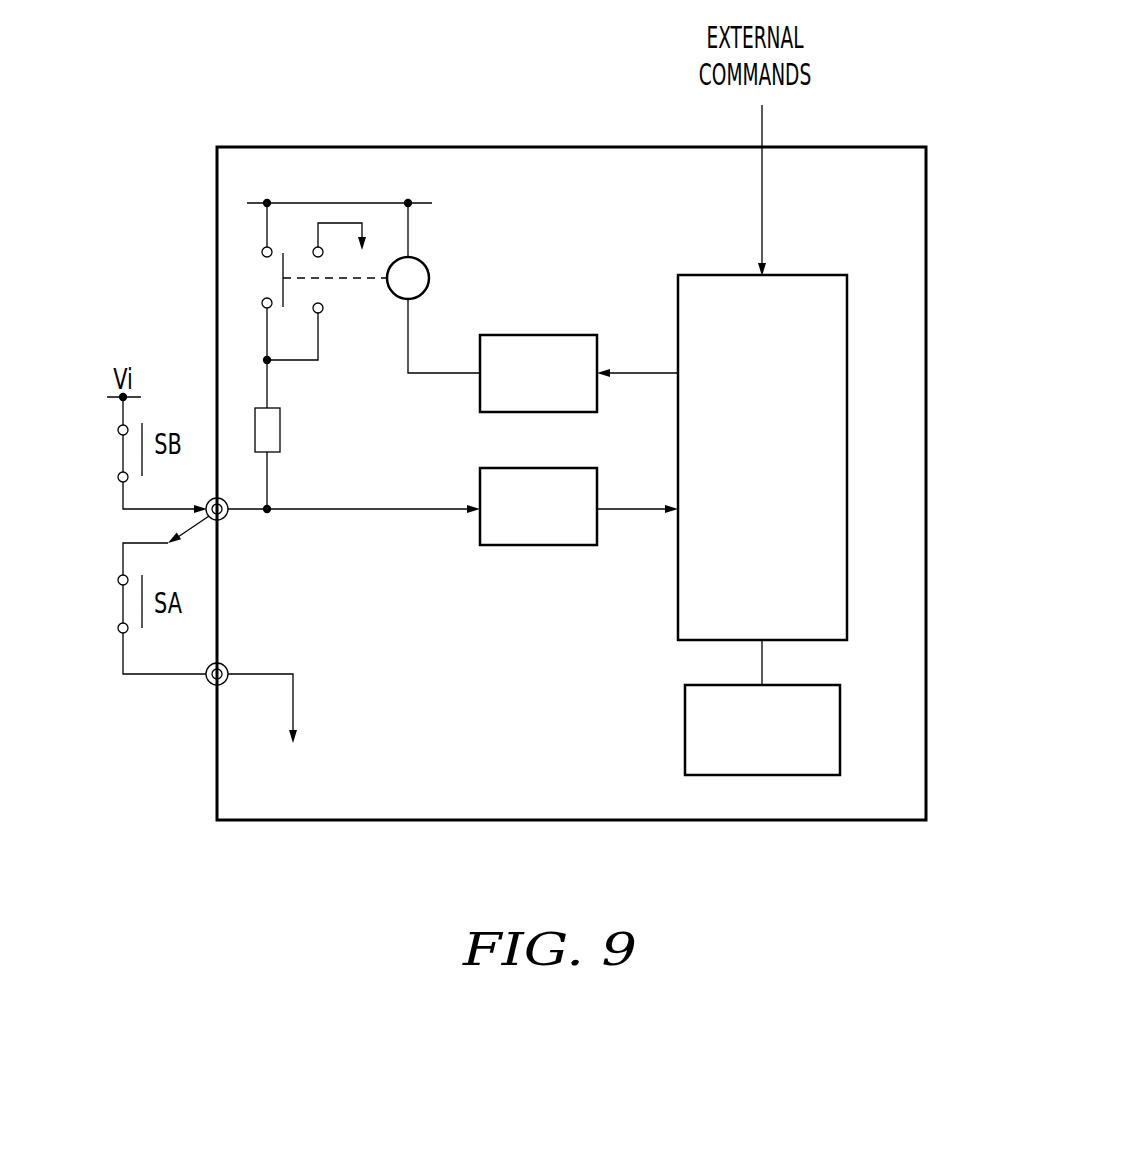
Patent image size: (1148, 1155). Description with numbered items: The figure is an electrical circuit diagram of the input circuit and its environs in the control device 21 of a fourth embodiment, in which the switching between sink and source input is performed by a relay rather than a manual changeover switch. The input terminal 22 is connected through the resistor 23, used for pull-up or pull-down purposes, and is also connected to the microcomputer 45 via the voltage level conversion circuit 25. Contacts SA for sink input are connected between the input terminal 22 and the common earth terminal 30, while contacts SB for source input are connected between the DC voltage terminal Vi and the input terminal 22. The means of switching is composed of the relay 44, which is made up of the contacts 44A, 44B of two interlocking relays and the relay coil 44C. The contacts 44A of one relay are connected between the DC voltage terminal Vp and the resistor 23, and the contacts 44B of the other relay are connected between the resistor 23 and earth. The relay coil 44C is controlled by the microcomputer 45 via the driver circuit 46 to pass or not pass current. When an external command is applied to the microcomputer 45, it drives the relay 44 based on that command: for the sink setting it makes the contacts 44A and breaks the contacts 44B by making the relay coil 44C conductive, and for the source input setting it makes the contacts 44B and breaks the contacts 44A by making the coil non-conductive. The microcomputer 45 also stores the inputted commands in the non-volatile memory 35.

The control device 21 is at (512, 147).
The input terminal 22 is at (227, 517).
The resistor 23 is at (280, 430).
The voltage level conversion circuit 25 is at (555, 545).
The common earth terminal 30 is at (212, 686).
The non-volatile memory 35 is at (685, 730).
The relay 44 is at (337, 284).
The relay contacts 44A is at (255, 275).
The relay contacts 44B is at (340, 309).
The relay coil 44C is at (430, 280).
The microcomputer 45 is at (847, 386).
The driver circuit 46 is at (537, 335).